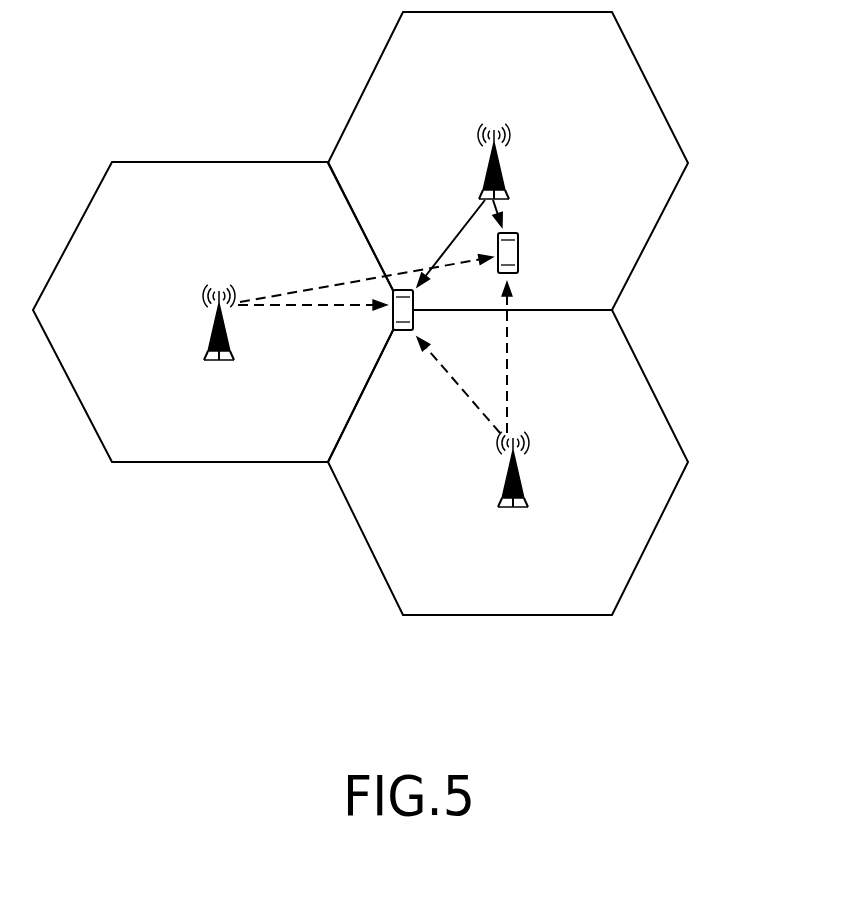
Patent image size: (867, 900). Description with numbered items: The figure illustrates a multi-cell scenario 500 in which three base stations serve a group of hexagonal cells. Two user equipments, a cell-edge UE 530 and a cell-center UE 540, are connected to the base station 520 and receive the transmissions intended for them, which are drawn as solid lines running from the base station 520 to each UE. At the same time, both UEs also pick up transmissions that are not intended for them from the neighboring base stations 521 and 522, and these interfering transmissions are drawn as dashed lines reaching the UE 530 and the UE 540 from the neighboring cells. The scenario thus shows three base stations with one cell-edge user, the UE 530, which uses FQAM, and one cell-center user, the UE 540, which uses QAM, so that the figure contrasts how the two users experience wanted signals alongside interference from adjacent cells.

The wireless communication environment with cells 500 is at (674, 50).
The base station 520 is at (535, 165).
The neighboring base station 521 is at (190, 346).
The neighboring base station 522 is at (483, 512).
The UE 530 is at (372, 336).
The UE 540 is at (544, 261).